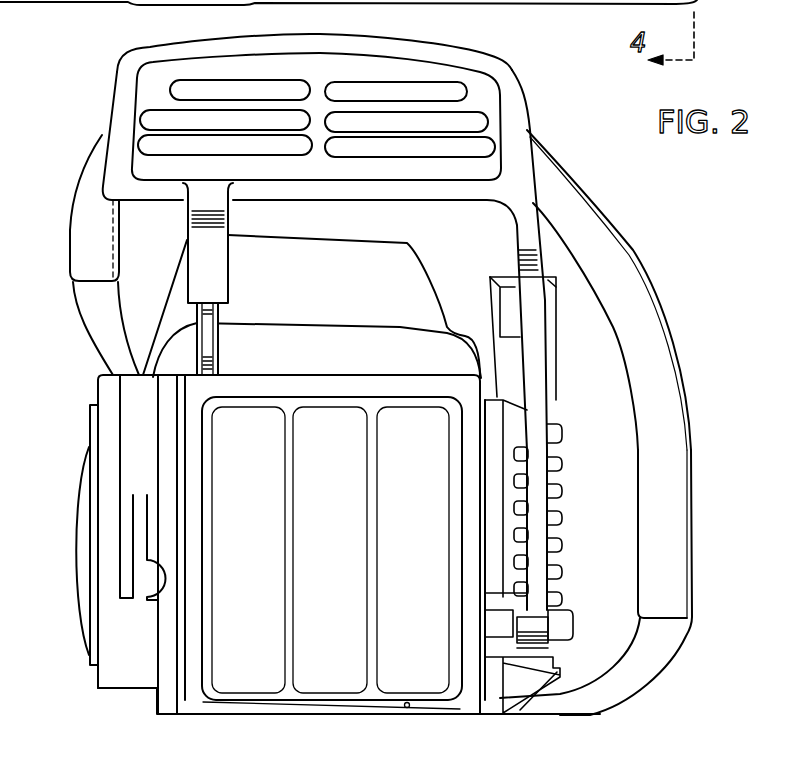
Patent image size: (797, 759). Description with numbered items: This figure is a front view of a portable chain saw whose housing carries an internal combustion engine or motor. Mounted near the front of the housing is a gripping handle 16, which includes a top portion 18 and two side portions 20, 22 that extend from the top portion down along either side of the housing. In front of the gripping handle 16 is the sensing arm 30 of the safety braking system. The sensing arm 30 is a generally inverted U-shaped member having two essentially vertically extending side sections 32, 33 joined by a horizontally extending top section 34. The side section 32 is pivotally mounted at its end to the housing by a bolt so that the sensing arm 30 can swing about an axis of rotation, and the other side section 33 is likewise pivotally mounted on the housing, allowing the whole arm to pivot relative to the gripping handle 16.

The gripping handle 16 is at (582, 178).
The top portion of gripping handle 18 is at (420, 97).
The side portion of gripping handle 20 is at (92, 333).
The side portion of gripping handle 22 is at (693, 557).
The sensing arm 30 is at (110, 90).
The side section of sensing arm 32 is at (210, 351).
The side section of sensing arm 33 is at (547, 382).
The top section of sensing arm 34 is at (372, 37).